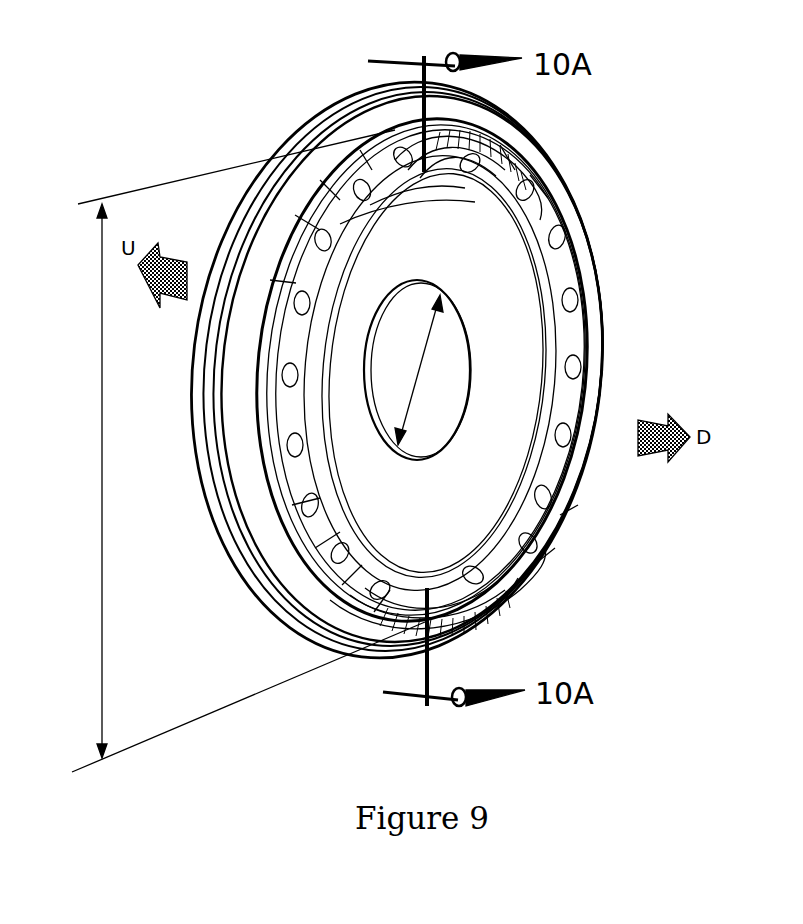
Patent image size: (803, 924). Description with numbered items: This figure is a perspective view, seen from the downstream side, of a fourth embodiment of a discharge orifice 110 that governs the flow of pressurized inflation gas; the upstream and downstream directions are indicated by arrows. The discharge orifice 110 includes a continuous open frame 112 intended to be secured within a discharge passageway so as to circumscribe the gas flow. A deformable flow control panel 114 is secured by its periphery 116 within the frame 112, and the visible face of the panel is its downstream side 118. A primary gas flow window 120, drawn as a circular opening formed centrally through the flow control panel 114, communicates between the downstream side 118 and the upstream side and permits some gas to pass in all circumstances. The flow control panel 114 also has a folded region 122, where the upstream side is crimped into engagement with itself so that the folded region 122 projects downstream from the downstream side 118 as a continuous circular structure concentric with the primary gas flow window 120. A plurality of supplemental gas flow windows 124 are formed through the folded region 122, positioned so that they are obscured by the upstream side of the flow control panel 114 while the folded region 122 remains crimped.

The discharge orifice 110 is at (336, 86).
The continuous open frame 112 is at (378, 114).
The deformable flow control panel 114 is at (241, 451).
The periphery 116 is at (396, 162).
The downstream side 118 is at (545, 200).
The primary gas flow window 120 is at (428, 366).
The folded region 122 is at (577, 478).
The supplemental gas flow windows 124 is at (300, 305).